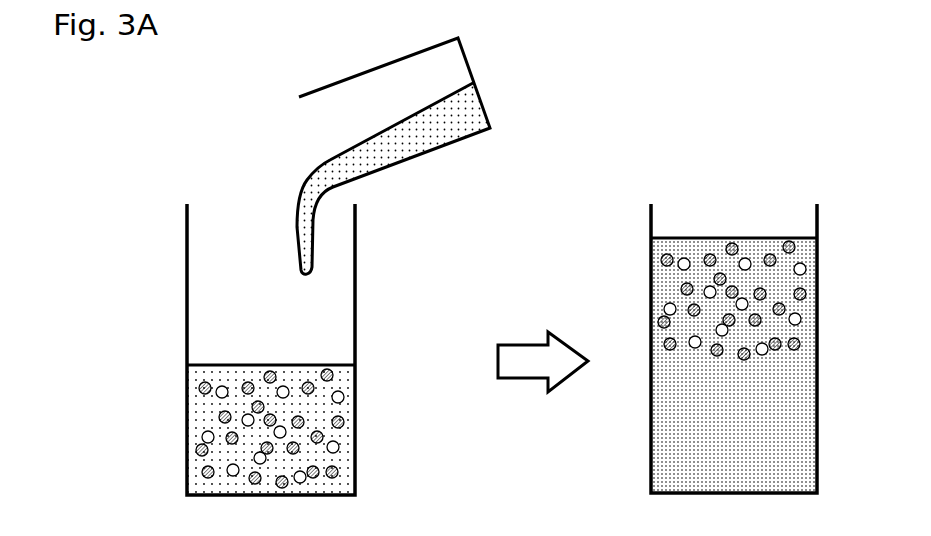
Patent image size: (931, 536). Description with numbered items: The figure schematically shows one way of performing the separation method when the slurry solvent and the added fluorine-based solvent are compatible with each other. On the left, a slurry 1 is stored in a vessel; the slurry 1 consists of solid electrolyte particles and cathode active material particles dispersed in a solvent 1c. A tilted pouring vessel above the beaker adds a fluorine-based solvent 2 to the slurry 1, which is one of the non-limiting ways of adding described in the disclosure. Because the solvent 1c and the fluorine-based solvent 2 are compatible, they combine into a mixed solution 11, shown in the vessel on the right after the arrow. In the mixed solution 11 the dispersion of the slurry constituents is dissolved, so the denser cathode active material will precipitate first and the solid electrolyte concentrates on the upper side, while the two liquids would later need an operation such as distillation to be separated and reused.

The slurry 1 is at (315, 430).
The solvent 1c is at (345, 460).
The fluorine-based solvent 2 is at (490, 127).
The mixed solution 11 is at (803, 433).